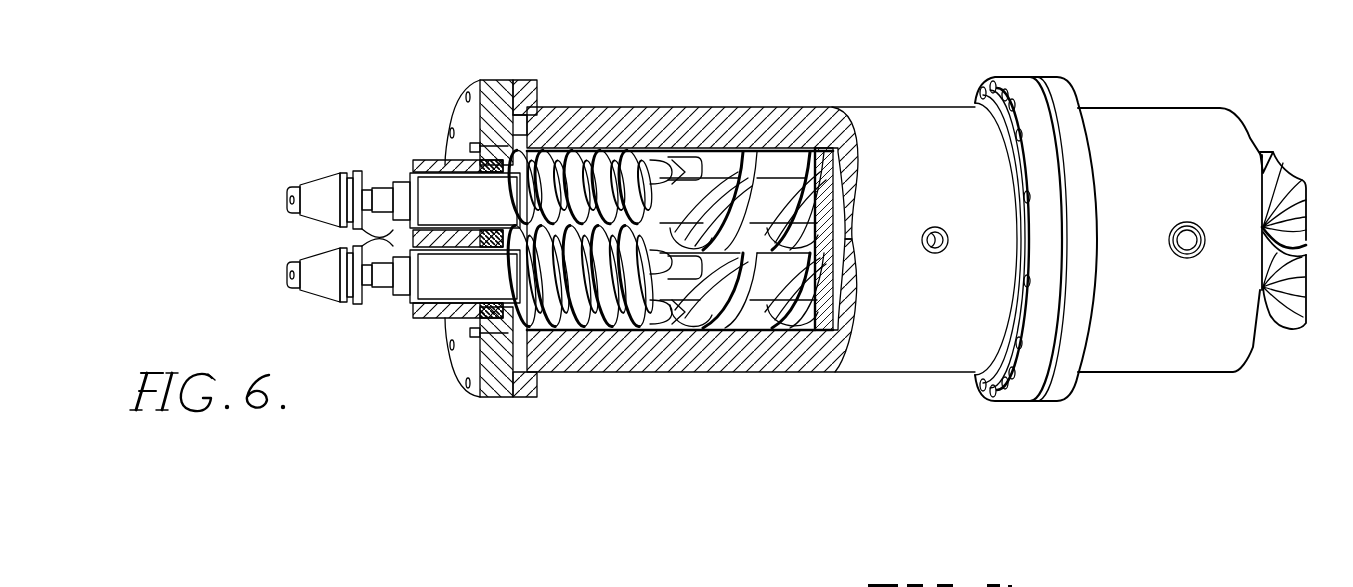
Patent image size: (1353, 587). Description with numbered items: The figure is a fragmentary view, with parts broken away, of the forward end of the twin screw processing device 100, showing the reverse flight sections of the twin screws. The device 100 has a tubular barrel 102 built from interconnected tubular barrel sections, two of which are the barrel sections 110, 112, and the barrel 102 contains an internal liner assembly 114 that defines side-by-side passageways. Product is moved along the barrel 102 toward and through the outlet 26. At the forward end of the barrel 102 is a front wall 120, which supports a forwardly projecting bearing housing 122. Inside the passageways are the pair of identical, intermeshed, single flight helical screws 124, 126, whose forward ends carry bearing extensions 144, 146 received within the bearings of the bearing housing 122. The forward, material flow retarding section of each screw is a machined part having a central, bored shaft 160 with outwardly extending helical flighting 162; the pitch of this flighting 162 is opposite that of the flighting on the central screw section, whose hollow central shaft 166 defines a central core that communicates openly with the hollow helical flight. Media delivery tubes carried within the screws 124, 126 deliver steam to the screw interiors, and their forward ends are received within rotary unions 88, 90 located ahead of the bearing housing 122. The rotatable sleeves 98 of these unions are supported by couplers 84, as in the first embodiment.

The processing device 100 is at (1192, 237).
The tubular barrel 102 is at (1114, 412).
The barrel section 110 is at (1177, 365).
The barrel section 112 is at (893, 366).
The internal liner assembly 114 is at (840, 234).
The front wall 120 is at (486, 400).
The bearing housing 122 is at (462, 160).
The helical screw 124 is at (795, 336).
The helical screw 126 is at (793, 140).
The bearing extension 144 is at (435, 298).
The bearing extension 146 is at (433, 185).
The bored shaft 160 is at (597, 175).
The helical flighting 162 is at (553, 160).
The central shaft 166 is at (710, 180).
The outlet 26 is at (690, 170).
The coupler 84 is at (393, 252).
The rotary union 88 is at (297, 304).
The rotary union 90 is at (297, 183).
The rotatable sleeve 98 is at (381, 198).